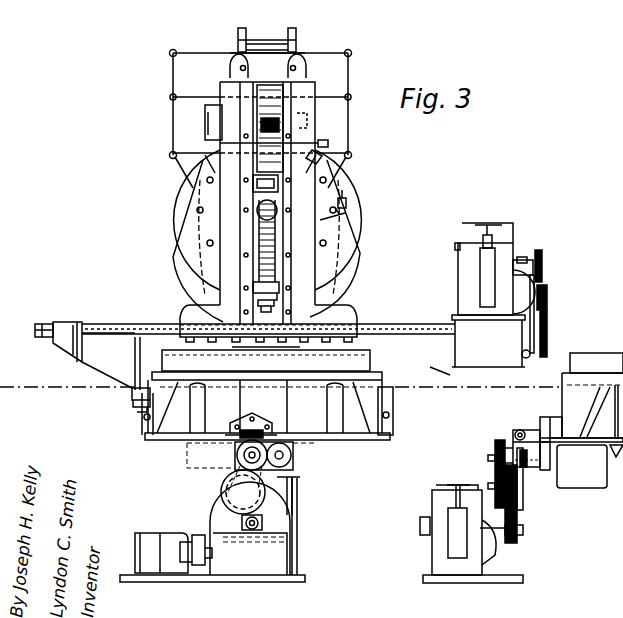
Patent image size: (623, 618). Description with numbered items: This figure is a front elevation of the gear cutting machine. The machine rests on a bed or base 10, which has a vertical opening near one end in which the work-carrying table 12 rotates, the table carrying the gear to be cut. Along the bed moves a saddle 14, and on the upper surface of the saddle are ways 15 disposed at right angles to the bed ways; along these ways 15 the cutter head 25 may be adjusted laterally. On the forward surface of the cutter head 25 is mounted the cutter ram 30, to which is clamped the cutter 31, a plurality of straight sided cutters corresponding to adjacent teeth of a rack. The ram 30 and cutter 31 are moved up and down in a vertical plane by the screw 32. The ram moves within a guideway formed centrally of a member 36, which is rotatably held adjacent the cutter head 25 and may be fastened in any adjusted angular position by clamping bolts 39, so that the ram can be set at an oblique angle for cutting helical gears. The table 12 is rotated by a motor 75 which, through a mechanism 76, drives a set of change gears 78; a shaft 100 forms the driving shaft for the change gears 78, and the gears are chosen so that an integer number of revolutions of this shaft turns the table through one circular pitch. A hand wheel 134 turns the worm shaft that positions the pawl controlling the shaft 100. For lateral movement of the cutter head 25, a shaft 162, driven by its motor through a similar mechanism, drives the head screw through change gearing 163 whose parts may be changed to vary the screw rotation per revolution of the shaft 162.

The bed or base 10 is at (142, 432).
The work-carrying table 12 is at (335, 356).
The saddle 14 is at (100, 340).
The ways 15 is at (115, 324).
The cutter head 25 is at (207, 306).
The cutter ram 30 is at (300, 150).
The cutter 31 is at (322, 158).
The screw 32 is at (260, 232).
The member 36 is at (203, 192).
The clamping bolts 39 is at (345, 205).
The motor 75 is at (146, 538).
The mechanism 76 is at (277, 557).
The change gears 78 is at (205, 490).
The shaft 100 is at (492, 532).
The hand wheel 134 is at (300, 487).
The shaft 162 is at (528, 262).
The change gearing 163 is at (543, 278).